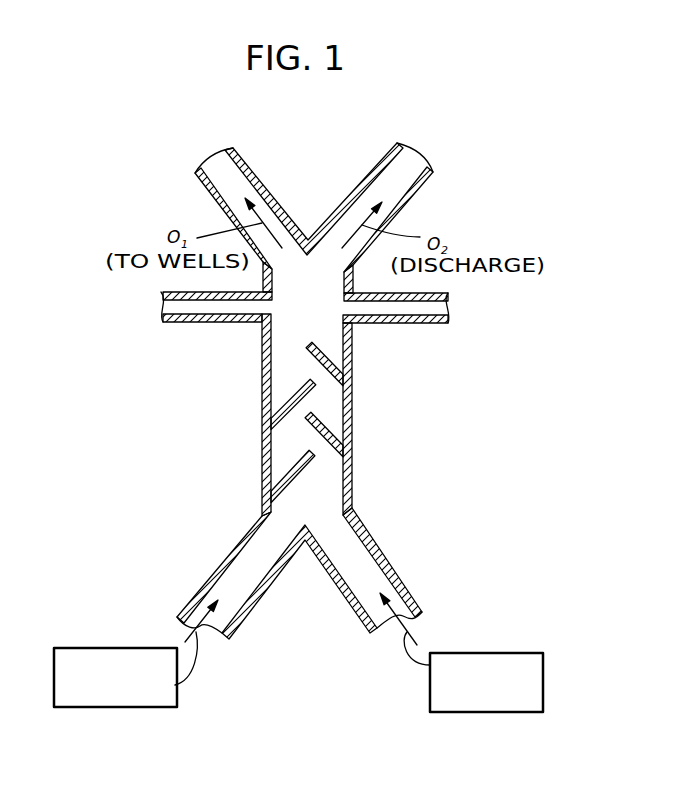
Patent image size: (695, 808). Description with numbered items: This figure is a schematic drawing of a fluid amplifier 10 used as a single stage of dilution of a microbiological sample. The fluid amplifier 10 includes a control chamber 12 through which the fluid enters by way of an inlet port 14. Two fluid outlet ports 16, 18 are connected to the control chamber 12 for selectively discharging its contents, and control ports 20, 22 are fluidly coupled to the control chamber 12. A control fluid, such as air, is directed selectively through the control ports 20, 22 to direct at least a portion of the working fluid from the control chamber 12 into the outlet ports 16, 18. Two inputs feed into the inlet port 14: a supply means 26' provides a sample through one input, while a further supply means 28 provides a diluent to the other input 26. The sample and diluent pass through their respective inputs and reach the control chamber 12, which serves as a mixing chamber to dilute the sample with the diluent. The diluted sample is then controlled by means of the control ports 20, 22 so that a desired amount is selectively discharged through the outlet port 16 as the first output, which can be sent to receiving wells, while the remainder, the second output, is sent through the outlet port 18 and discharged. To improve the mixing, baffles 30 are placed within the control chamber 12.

The fluid amplifier 10 is at (376, 418).
The control chamber 12 is at (262, 384).
The inlet port 14 is at (353, 490).
The fluid outlet port 16 is at (248, 166).
The fluid outlet port 18 is at (365, 183).
The control port 20 is at (410, 323).
The control port 22 is at (172, 323).
The input 26 is at (233, 584).
The supply means 26' is at (473, 664).
The supply means 28 is at (116, 622).
The baffles 30 is at (330, 328).